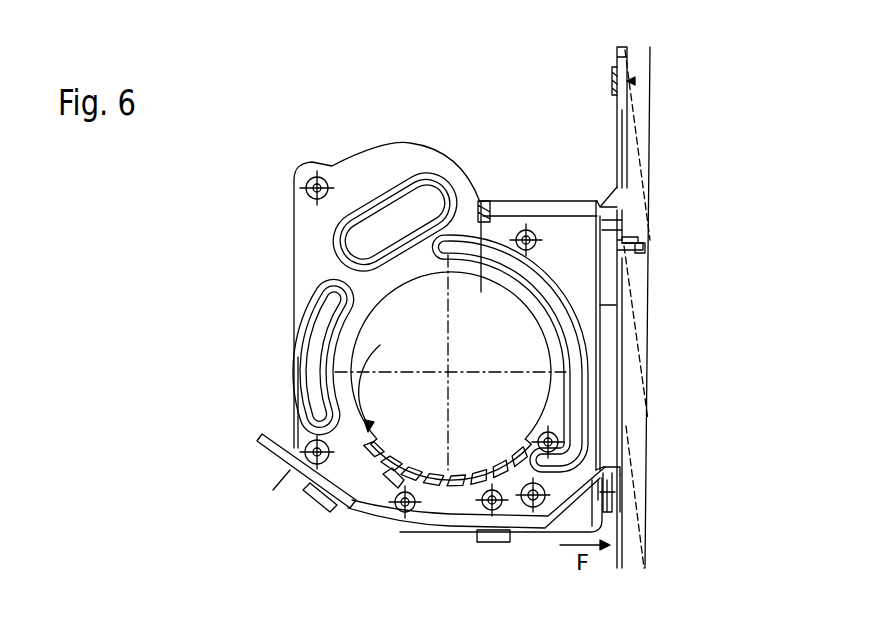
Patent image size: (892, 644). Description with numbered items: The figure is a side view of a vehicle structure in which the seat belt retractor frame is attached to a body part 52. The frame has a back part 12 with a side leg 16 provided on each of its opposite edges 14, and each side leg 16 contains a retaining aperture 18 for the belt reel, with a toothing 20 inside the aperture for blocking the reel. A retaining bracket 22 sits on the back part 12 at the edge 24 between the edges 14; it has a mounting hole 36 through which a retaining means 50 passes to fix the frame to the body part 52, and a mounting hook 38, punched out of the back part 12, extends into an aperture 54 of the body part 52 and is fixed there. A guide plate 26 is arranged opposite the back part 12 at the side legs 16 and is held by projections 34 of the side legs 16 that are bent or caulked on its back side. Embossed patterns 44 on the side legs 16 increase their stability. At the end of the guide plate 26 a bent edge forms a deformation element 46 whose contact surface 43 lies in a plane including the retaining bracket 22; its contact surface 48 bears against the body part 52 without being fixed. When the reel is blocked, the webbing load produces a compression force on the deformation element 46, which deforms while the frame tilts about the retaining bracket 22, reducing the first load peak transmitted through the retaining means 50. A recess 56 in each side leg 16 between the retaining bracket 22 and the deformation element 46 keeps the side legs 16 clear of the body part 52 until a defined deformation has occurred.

The back part 12 is at (582, 198).
The opposite edges 14 is at (547, 207).
The side leg 16 is at (484, 205).
The retaining aperture 18 is at (357, 360).
The toothing 20 is at (397, 468).
The retaining bracket 22 is at (615, 60).
The edge 24 is at (620, 203).
The guide plate 26 is at (268, 463).
The projections 34 is at (497, 534).
The mounting hole 36 is at (636, 82).
The mounting hook 38 is at (645, 248).
The contact surface 43 is at (303, 503).
The embossed patterns 44 is at (432, 195).
The deformation element 46 is at (610, 460).
The contact surface 48 is at (620, 490).
The retaining means 50 is at (612, 83).
The body part 52 is at (652, 150).
The aperture 54 is at (640, 238).
The recess 56 is at (600, 312).